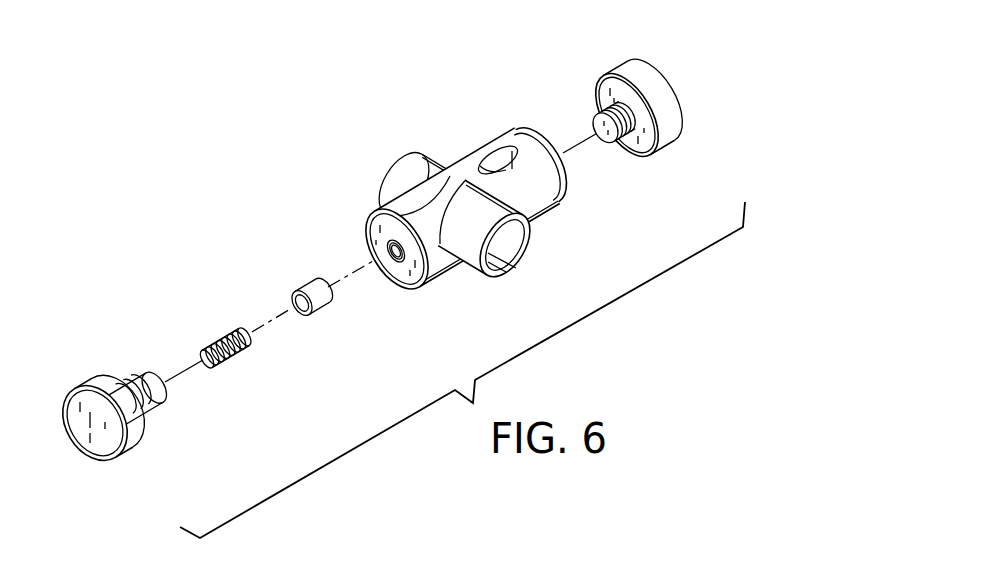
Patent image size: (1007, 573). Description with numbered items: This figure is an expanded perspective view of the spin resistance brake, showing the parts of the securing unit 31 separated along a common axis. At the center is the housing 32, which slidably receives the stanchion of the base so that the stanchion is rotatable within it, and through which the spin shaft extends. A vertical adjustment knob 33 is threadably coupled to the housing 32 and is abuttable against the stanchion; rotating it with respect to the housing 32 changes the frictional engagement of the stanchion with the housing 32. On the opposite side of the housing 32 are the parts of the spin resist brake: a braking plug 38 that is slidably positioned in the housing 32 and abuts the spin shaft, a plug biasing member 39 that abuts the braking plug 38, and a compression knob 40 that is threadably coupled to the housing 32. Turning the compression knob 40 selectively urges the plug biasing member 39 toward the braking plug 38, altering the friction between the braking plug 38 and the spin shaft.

The securing unit 31 is at (209, 103).
The housing 32 is at (452, 172).
The vertical adjustment knob 33 is at (614, 70).
The braking plug 38 is at (299, 290).
The plug biasing member 39 is at (212, 345).
The compression knob 40 is at (88, 377).